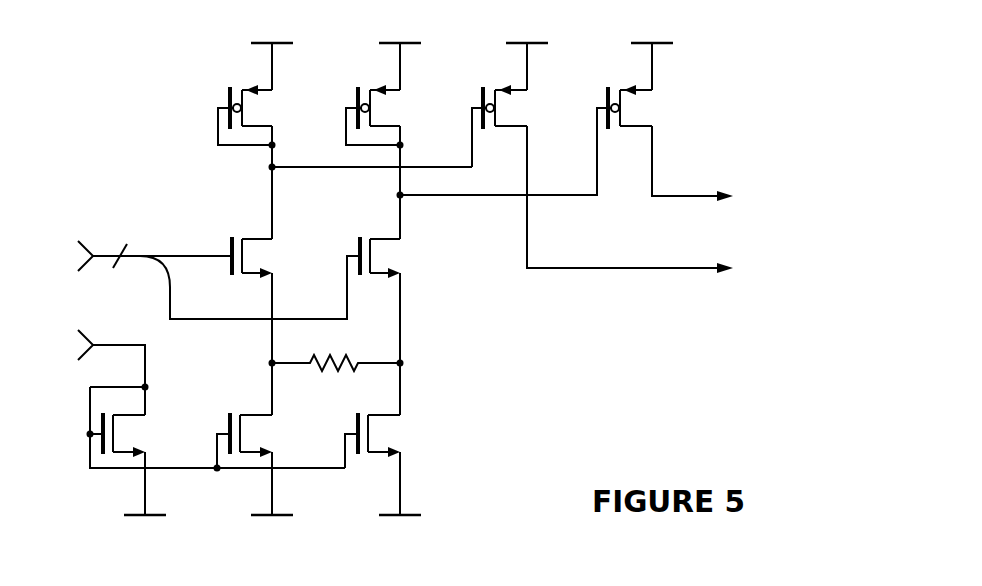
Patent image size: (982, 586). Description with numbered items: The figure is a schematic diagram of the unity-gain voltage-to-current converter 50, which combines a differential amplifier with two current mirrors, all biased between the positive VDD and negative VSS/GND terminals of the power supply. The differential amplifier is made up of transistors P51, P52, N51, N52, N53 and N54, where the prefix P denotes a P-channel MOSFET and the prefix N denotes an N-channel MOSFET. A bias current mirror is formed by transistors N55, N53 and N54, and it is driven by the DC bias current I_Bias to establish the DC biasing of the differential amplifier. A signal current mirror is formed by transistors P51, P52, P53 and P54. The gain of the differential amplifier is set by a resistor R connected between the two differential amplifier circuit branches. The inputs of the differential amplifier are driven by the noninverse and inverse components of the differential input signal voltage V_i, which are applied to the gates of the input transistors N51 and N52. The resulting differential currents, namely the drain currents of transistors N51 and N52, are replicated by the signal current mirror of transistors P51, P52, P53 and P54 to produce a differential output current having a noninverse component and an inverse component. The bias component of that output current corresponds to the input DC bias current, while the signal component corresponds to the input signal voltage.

The unity-gain voltage-to-current converter 50 is at (421, 284).
The P-channel MOSFET transistor P51 is at (256, 94).
The P-channel MOSFET transistor P52 is at (385, 94).
The P-channel MOSFET transistor P53 is at (511, 105).
The P-channel MOSFET transistor P54 is at (636, 119).
The N-channel MOSFET transistor N51 is at (198, 257).
The N-channel MOSFET transistor N52 is at (284, 278).
The N-channel MOSFET transistor N53 is at (259, 440).
The N-channel MOSFET transistor N54 is at (387, 440).
The N-channel MOSFET transistor N55 is at (217, 451).
The resistor R is at (336, 353).